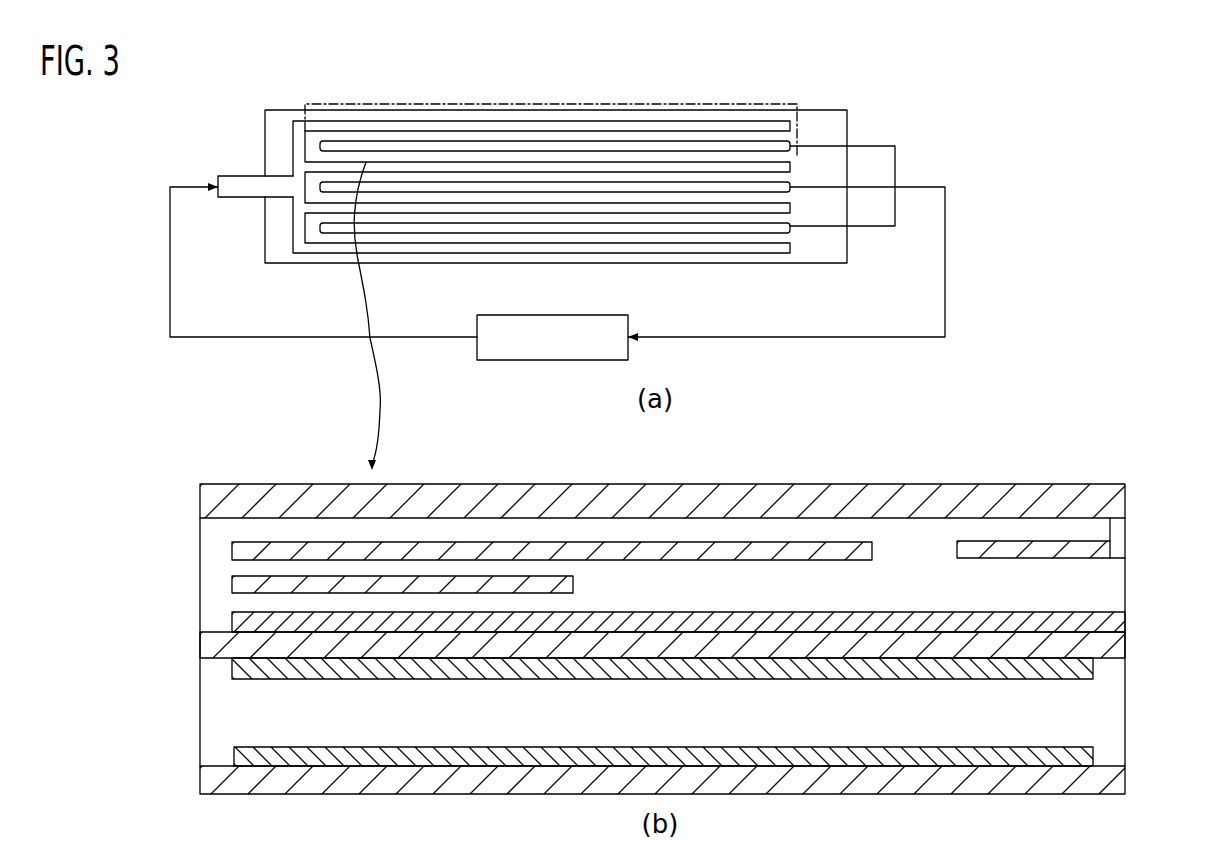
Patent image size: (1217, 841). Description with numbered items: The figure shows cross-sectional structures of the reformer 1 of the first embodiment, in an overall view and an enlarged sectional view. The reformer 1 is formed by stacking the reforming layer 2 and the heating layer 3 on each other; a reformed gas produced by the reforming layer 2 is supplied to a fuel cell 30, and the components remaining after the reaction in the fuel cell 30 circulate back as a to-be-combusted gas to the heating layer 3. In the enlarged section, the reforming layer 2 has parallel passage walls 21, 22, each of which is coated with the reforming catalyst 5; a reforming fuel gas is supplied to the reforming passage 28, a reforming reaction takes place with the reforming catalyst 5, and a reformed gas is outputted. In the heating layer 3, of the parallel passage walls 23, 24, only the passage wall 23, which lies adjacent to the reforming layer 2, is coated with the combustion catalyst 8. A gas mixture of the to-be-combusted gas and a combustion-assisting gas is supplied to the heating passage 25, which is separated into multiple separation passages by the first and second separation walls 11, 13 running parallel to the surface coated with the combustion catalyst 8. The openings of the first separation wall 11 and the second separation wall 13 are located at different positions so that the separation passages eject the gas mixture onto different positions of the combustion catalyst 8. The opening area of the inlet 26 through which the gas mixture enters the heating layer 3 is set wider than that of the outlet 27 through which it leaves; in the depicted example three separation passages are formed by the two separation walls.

The reformer 1 is at (826, 84).
The reforming layer 2 is at (522, 140).
The heating layer 3 is at (650, 118).
The fuel cell 30 is at (552, 361).
The first separation wall 11 is at (447, 585).
The second separation wall 13 is at (533, 558).
The passage wall 24 is at (1108, 508).
The inlet 26 is at (200, 547).
The heating passage 25 is at (178, 596).
The outlet 27 is at (1115, 588).
The reforming passage 28 is at (178, 720).
The combustion catalyst 8 is at (1127, 607).
The passage wall 23 is at (1127, 627).
The passage wall 22 is at (1110, 662).
The reforming catalyst 5 is at (1094, 677).
The passage wall 21 is at (1125, 757).